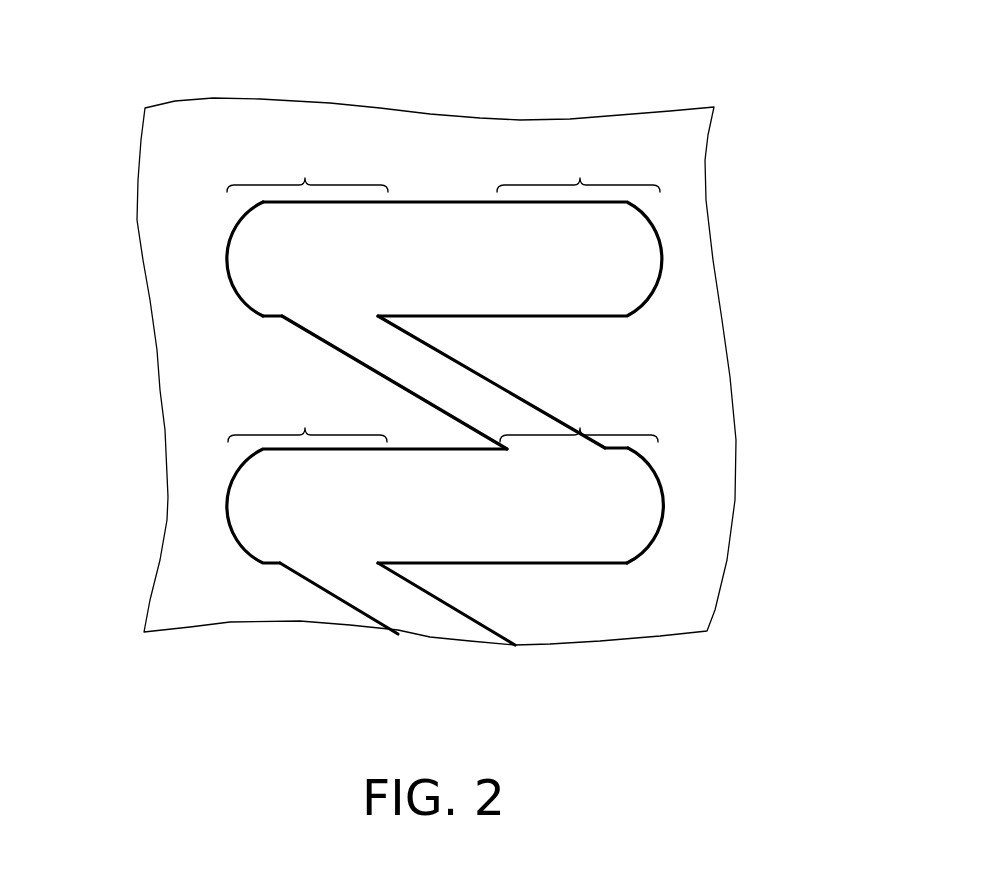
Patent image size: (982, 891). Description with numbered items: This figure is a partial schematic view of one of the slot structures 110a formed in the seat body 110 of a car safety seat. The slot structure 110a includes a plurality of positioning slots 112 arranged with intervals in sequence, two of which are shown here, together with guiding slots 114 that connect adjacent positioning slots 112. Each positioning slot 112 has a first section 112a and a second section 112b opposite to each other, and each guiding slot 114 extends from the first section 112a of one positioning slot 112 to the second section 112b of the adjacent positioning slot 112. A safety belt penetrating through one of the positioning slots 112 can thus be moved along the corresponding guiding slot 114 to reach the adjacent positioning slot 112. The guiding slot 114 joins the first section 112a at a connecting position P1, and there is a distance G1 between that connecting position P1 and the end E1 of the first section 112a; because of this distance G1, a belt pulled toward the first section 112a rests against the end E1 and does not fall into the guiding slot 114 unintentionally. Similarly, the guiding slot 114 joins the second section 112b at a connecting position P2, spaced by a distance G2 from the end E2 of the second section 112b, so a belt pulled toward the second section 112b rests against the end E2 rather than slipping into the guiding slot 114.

The seat body 110 is at (707, 377).
The slot structure 110a is at (208, 513).
The positioning slot 112 is at (441, 367).
The first section 112a is at (305, 178).
The second section 112b is at (580, 178).
The guiding slot 114 is at (412, 584).
The connecting position P1 is at (363, 261).
The end of the first section E1 is at (164, 259).
The distance G1 is at (273, 318).
The connecting position P2 is at (522, 525).
The end of the second section E2 is at (722, 505).
The distance G2 is at (617, 440).